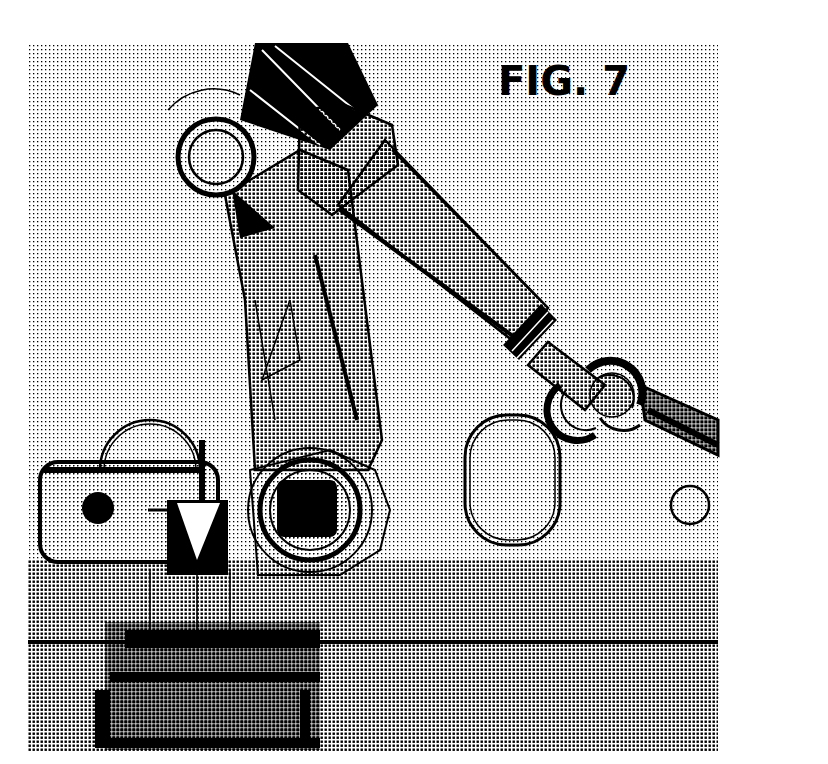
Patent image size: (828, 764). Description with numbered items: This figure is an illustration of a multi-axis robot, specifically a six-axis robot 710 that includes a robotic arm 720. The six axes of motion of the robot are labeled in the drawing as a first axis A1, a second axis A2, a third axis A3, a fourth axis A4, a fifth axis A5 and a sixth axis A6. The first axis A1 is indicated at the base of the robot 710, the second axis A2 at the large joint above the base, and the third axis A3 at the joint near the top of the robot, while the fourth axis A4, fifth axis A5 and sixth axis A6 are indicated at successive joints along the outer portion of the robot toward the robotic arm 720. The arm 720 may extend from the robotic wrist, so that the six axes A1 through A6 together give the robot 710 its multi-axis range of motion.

The six-axis robot 710 is at (361, 396).
The robotic arm 720 is at (686, 400).
The first axis A1 is at (125, 655).
The second axis A2 is at (335, 520).
The third axis A3 is at (205, 148).
The fourth axis A4 is at (540, 322).
The fifth axis A5 is at (622, 360).
The sixth axis A6 is at (640, 432).